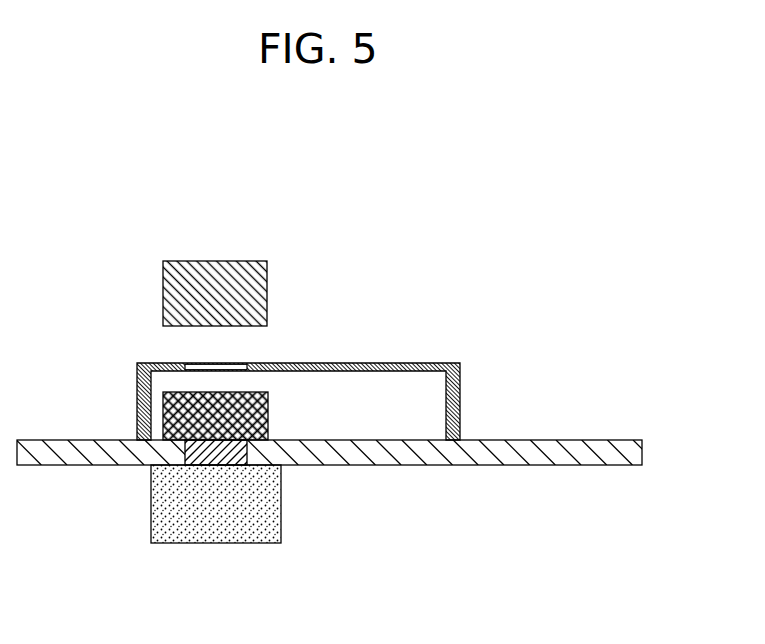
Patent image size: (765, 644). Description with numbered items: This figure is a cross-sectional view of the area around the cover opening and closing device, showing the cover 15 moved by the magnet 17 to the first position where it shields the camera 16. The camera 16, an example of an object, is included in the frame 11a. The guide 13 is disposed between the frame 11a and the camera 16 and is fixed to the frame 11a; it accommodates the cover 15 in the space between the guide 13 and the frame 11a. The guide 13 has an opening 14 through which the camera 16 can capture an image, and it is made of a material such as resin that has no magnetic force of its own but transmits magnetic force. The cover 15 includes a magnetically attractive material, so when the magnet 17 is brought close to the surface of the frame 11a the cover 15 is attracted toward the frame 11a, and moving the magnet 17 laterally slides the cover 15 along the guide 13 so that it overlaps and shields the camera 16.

The frame 11a is at (562, 465).
The guide 13 is at (460, 403).
The opening 14 is at (186, 366).
The cover 15 is at (163, 408).
The camera 16 is at (267, 285).
The magnet 17 is at (152, 522).